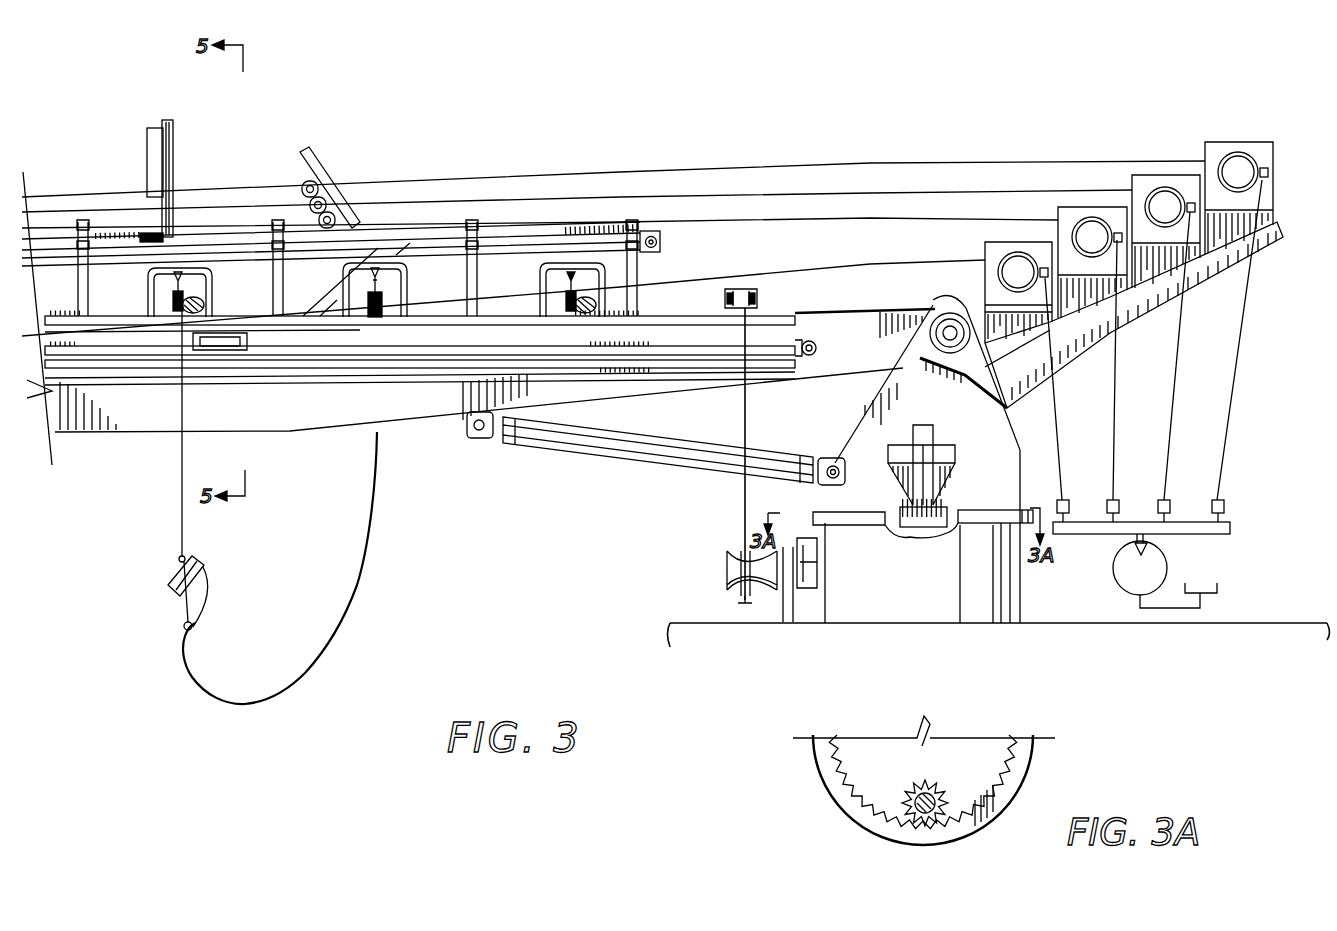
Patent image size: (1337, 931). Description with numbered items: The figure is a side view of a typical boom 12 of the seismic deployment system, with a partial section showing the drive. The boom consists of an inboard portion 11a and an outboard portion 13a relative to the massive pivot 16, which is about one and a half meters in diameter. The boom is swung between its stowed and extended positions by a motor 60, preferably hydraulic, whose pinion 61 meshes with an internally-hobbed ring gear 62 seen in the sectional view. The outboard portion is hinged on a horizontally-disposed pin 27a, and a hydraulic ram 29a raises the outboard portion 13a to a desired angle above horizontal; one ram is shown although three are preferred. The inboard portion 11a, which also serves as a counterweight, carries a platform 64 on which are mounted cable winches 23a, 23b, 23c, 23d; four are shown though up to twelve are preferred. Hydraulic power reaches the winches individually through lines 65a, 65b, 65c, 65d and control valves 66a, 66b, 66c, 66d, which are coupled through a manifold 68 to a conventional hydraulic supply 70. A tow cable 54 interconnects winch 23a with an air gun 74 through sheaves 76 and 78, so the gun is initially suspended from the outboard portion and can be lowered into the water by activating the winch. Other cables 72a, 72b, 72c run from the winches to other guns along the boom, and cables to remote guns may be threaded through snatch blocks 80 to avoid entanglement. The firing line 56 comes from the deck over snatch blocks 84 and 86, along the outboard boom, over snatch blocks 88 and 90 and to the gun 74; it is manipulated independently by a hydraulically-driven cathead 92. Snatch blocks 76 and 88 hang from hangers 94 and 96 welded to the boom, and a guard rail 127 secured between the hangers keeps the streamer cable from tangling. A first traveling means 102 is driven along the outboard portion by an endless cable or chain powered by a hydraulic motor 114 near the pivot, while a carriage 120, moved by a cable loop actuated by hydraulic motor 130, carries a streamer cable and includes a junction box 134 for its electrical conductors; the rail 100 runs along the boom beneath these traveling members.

In FIG. 3, the inboard portion 11a is at (1278, 265).
In FIG. 3, the boom 12 is at (131, 433).
In FIG. 3, the outboard portion 13a is at (435, 456).
In FIG. 3, the pivot 16 is at (880, 408).
In FIG. 3, the cable winch 23a is at (1015, 242).
In FIG. 3, the cable winch 23b is at (1091, 207).
In FIG. 3, the cable winch 23c is at (1163, 175).
In FIG. 3, the cable winch 23d is at (1237, 142).
In FIG. 3, the horizontally-disposed pin 27a is at (946, 330).
In FIG. 3, the hydraulic ram 29a is at (612, 445).
In FIG. 3, the tow cable 54 is at (893, 268).
In FIG. 3, the firing line 56 is at (366, 519).
In FIG. 3, the motor 60 is at (943, 445).
In FIG. 3, the pinion 61 is at (920, 527).
In FIG. 3A, the pinion 61 is at (942, 798).
In FIG. 3, the ring gear 62 is at (975, 510).
In FIG. 3A, the ring gear 62 is at (840, 795).
In FIG. 3, the platform 64 is at (1145, 300).
In FIG. 3, the hydraulic line 65a is at (1060, 402).
In FIG. 3, the hydraulic line 65b is at (1116, 402).
In FIG. 3, the hydraulic line 65c is at (1170, 402).
In FIG. 3, the hydraulic line 65d is at (1225, 395).
In FIG. 3, the control valve 66a is at (1085, 490).
In FIG. 3, the control valve 66b is at (1119, 505).
In FIG. 3, the control valve 66c is at (1170, 505).
In FIG. 3, the control valve 66d is at (1224, 505).
In FIG. 3, the manifold 68 is at (1233, 528).
In FIG. 3, the hydraulic supply 70 is at (1108, 573).
In FIG. 3, the cable 72a is at (905, 216).
In FIG. 3, the cable 72b is at (905, 190).
In FIG. 3, the cable 72c is at (905, 164).
In FIG. 3, the air gun 74 is at (172, 588).
In FIG. 3, the sheave 76 is at (173, 290).
In FIG. 3, the sheave 78 is at (173, 306).
In FIG. 3, the snatch block 80 is at (345, 152).
In FIG. 3, the snatch block 84 is at (750, 290).
In FIG. 3, the snatch block 86 is at (726, 297).
In FIG. 3, the snatch block 88 is at (371, 318).
In FIG. 3, the snatch block 90 is at (382, 312).
In FIG. 3, the cathead 92 is at (718, 568).
In FIG. 3, the hanger 94 is at (213, 285).
In FIG. 3, the hanger 96 is at (408, 278).
In FIG. 3, the rail 100 is at (292, 356).
In FIG. 3, the first traveling means 102 is at (232, 350).
In FIG. 3, the hydraulic motor 114 is at (816, 347).
In FIG. 3, the carriage 120 is at (140, 238).
In FIG. 3, the guard rail 127 is at (308, 262).
In FIG. 3, the hydraulic motor 130 is at (660, 243).
In FIG. 3, the junction box 134 is at (147, 145).